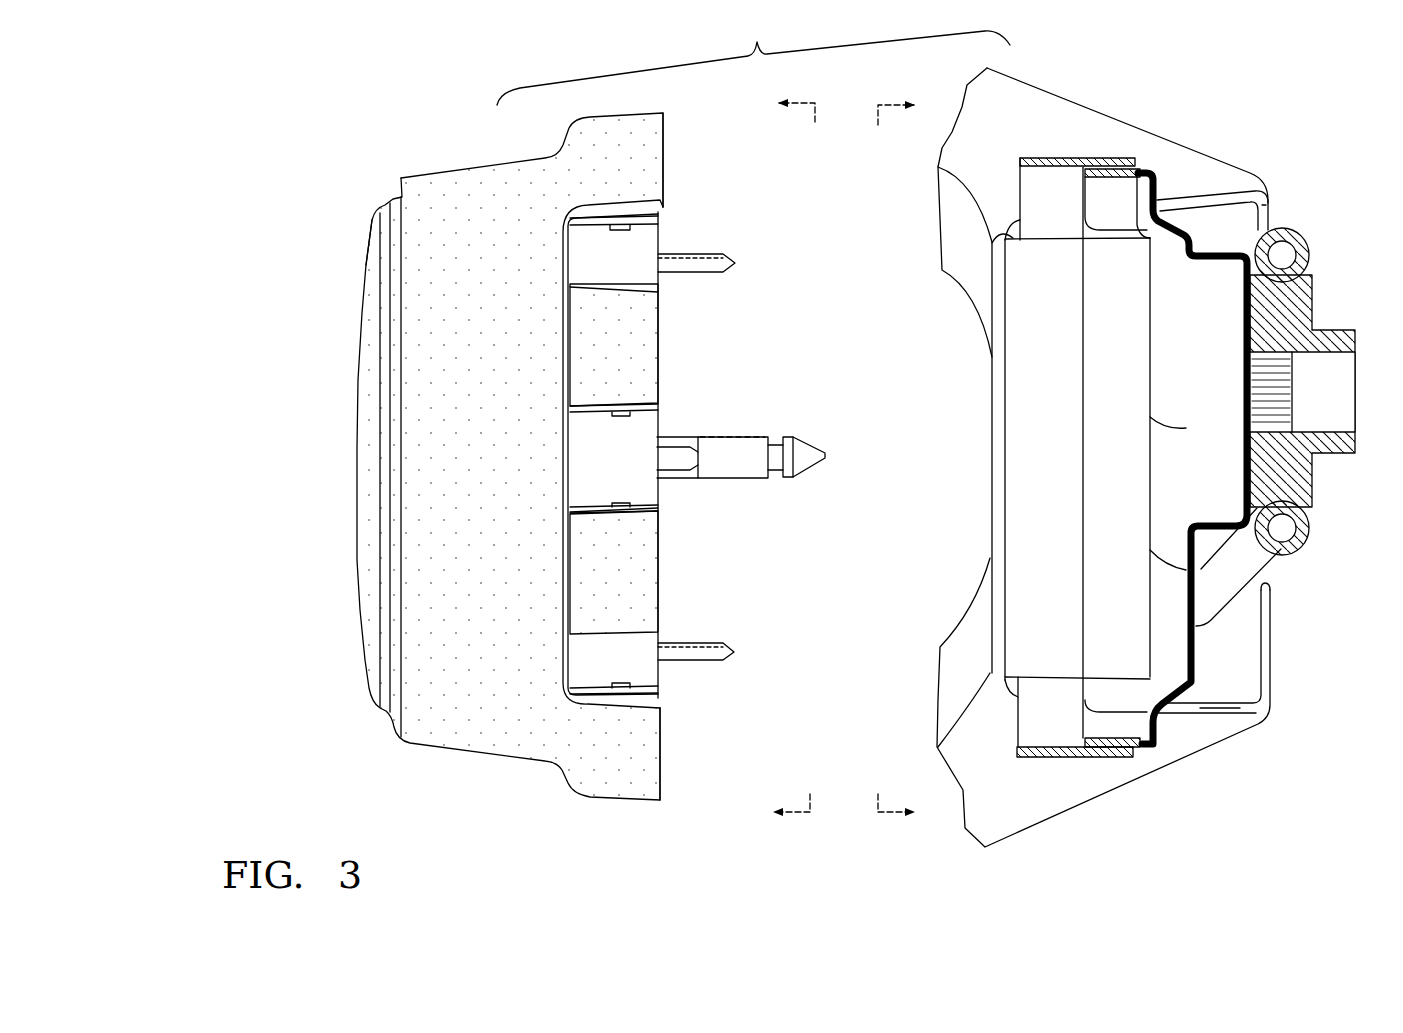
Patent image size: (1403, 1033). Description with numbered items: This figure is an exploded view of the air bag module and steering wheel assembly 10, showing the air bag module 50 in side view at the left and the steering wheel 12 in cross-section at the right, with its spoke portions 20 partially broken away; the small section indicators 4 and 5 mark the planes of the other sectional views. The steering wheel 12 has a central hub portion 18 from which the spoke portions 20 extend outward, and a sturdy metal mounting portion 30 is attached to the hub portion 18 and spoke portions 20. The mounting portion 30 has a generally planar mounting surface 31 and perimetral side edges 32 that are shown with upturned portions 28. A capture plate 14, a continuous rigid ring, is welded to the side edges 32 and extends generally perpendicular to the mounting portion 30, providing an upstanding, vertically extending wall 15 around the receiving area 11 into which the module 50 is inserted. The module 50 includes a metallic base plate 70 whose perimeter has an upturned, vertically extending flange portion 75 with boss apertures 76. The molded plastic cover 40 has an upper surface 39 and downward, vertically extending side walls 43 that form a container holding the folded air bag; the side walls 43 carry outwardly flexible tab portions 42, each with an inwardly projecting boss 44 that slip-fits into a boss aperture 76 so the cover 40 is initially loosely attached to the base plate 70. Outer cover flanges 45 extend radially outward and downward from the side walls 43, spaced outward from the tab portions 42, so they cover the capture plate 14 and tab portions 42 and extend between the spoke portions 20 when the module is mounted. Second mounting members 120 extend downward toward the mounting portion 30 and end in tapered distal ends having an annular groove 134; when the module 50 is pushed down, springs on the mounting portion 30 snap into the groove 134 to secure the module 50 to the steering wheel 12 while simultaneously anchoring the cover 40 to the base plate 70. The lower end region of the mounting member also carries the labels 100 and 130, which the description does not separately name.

The air bag module and steering wheel assembly 10 is at (745, 38).
The section line 4- 4 is at (894, 459).
The section line 5- 5 is at (774, 455).
The cover 40 is at (403, 176).
The side walls 43 is at (452, 205).
The outer cover flanges 45 is at (650, 148).
The tab portions 42 is at (656, 222).
The bosses 44 is at (630, 228).
The boss apertures 76 is at (612, 229).
The upper surface 39 is at (356, 467).
The air bag module 50 is at (347, 572).
The flange portion 75 is at (648, 665).
The base plate 70 is at (660, 677).
The connector 100 is at (762, 480).
The second mounting members 120 is at (762, 440).
The connector tip 130 is at (810, 452).
The annular groove 134 is at (775, 468).
The steering wheel 12 is at (1242, 763).
The spoke portions 20 is at (1203, 175).
The vertically extending wall 15 is at (1018, 747).
The receiving area 11 is at (1100, 450).
The capture plate 14 is at (1053, 158).
The upturned portions 28 is at (1107, 169).
The perimetral side edges 32 is at (1141, 168).
The mounting surface 31 is at (1176, 568).
The mounting portion 30 is at (1202, 645).
The central hub portion 18 is at (1305, 475).